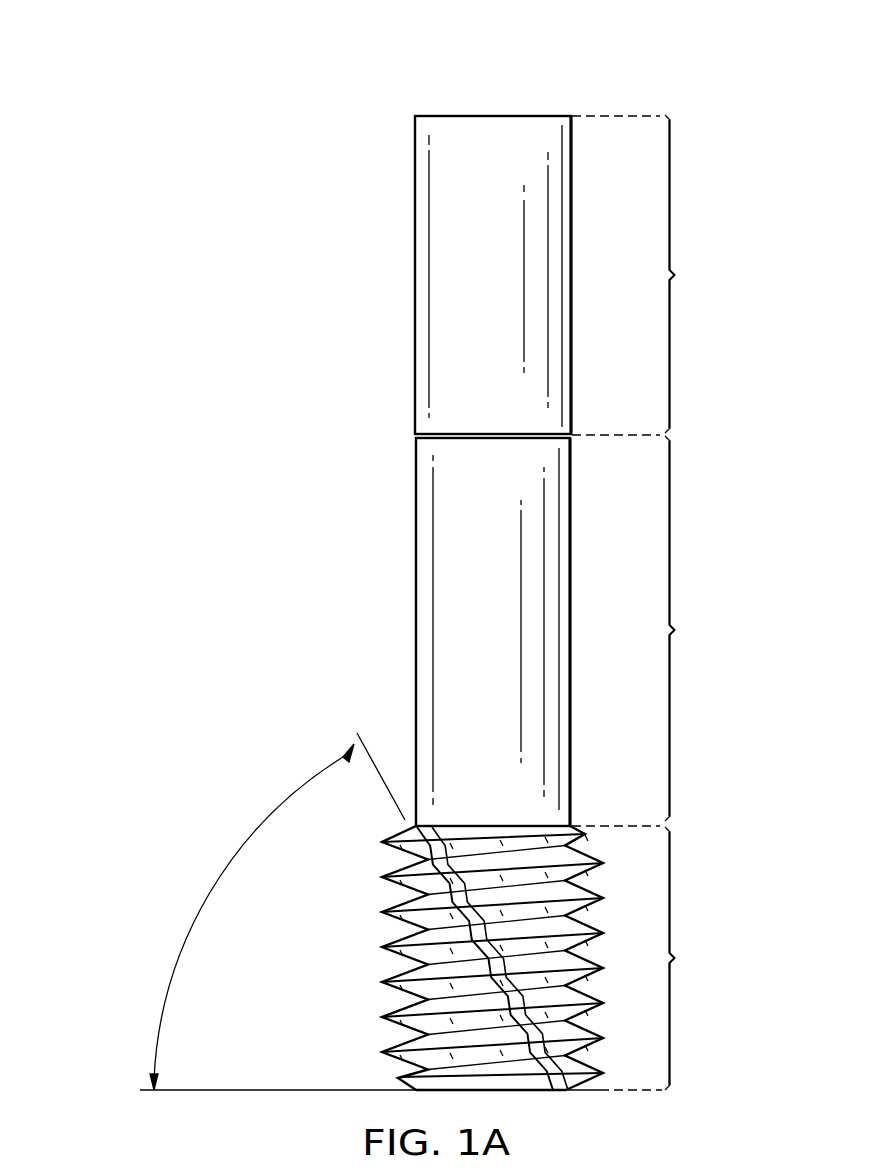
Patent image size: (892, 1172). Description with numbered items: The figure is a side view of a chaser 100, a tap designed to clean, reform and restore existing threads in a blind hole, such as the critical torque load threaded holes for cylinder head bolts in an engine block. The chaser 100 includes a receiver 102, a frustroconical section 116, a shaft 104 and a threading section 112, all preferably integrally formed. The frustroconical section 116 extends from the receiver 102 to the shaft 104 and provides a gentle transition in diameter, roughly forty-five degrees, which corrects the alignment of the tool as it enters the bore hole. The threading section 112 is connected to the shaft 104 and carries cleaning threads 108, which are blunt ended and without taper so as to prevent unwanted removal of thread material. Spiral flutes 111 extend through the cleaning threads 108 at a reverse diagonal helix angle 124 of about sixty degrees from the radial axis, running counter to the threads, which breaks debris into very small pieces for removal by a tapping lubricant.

The chaser 100 is at (328, 83).
The receiver 102 is at (572, 274).
The shaft 104 is at (573, 630).
The cleaning threads 108 is at (601, 920).
The spiral flutes 111 is at (574, 1092).
The threading section 112 is at (556, 986).
The frustroconical section 116 is at (405, 447).
The helix angle 124 is at (208, 887).